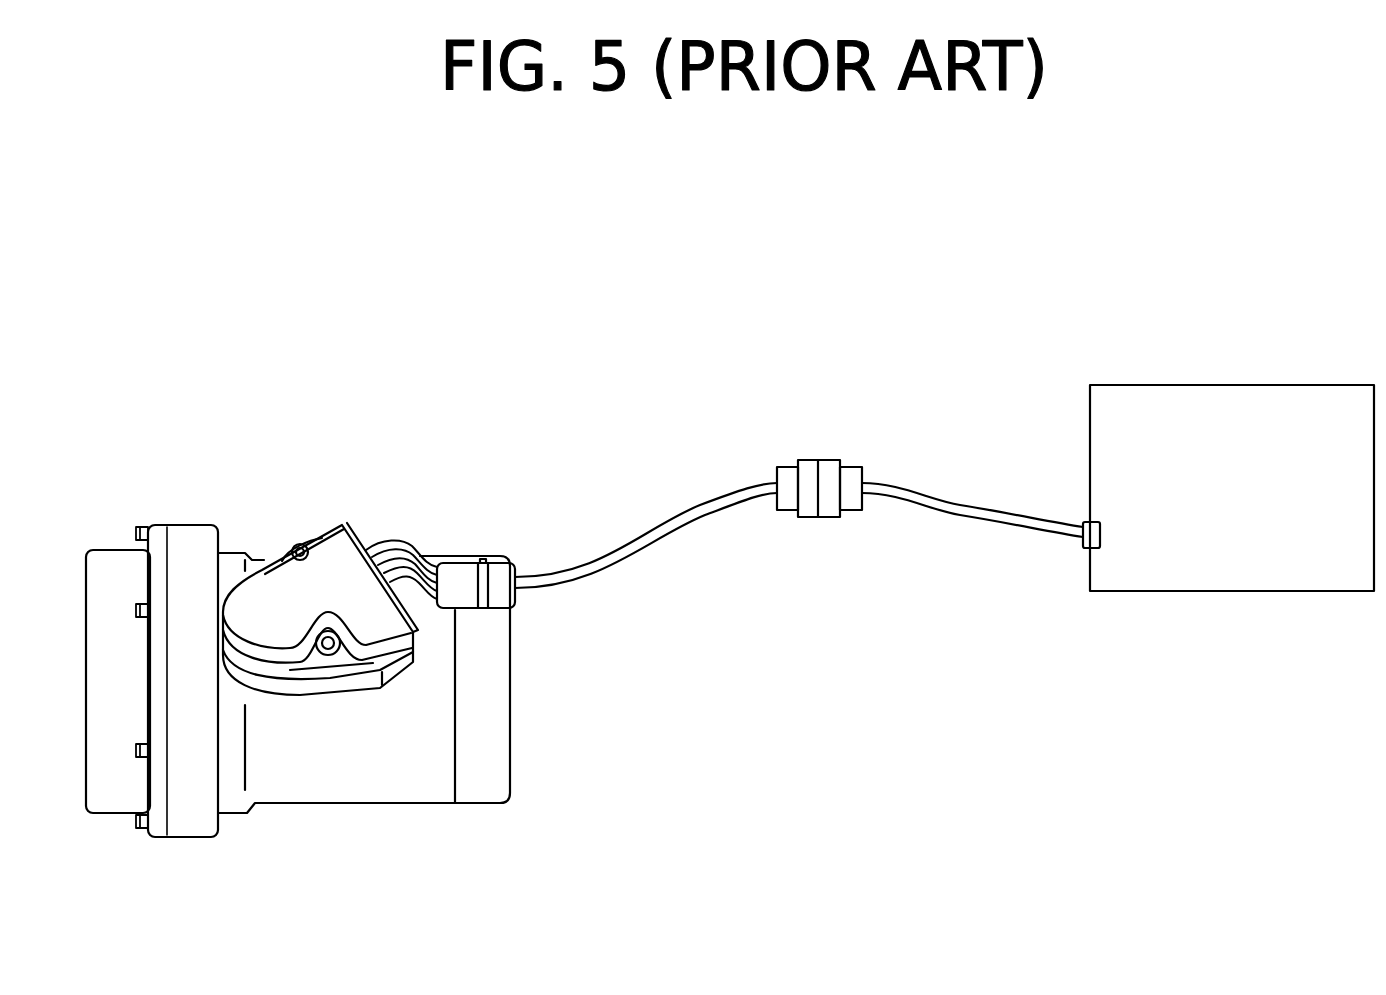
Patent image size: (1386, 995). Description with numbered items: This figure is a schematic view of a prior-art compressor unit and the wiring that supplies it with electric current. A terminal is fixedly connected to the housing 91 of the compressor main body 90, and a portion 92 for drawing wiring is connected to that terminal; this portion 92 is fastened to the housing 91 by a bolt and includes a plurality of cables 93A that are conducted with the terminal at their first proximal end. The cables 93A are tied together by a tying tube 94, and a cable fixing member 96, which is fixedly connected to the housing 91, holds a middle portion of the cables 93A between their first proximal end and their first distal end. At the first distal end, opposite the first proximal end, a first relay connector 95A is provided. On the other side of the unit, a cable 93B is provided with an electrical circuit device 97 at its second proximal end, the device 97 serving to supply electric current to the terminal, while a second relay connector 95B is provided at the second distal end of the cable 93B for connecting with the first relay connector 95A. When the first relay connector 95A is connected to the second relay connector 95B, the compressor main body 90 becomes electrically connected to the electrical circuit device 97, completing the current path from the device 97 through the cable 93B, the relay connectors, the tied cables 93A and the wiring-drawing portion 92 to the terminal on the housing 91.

The compressor main body 90 is at (305, 806).
The housing 91 is at (393, 790).
The portion for drawing wiring 92 is at (272, 580).
The cables 93A is at (406, 549).
The cable 93B is at (945, 504).
The tying tube 94 is at (668, 526).
The first relay connector 95A is at (800, 513).
The second relay connector 95B is at (832, 518).
The cable fixing member 96 is at (513, 576).
The electrical circuit device 97 is at (1232, 592).